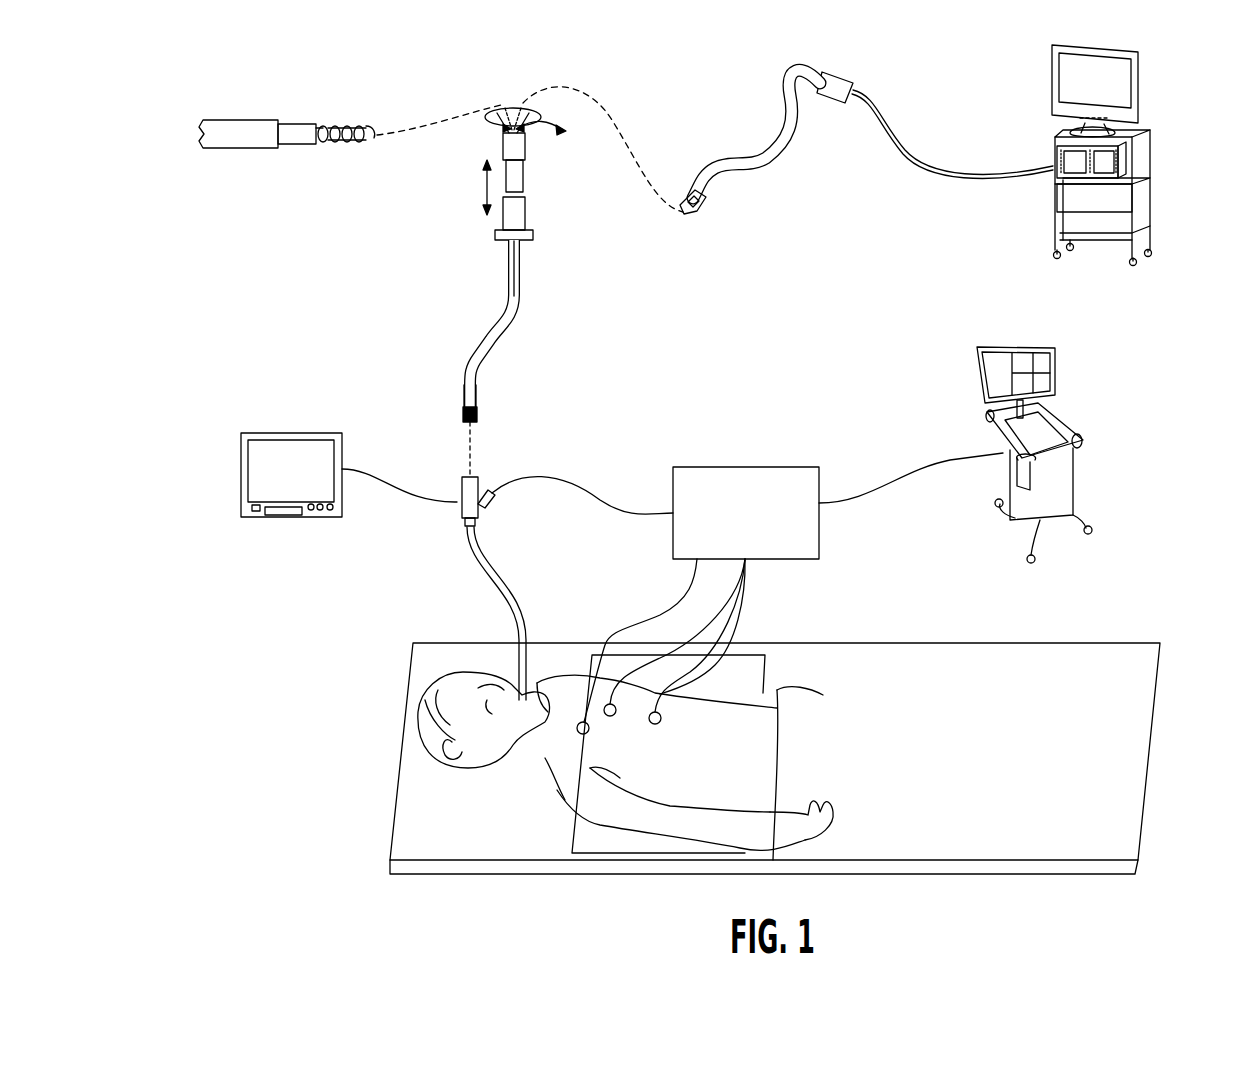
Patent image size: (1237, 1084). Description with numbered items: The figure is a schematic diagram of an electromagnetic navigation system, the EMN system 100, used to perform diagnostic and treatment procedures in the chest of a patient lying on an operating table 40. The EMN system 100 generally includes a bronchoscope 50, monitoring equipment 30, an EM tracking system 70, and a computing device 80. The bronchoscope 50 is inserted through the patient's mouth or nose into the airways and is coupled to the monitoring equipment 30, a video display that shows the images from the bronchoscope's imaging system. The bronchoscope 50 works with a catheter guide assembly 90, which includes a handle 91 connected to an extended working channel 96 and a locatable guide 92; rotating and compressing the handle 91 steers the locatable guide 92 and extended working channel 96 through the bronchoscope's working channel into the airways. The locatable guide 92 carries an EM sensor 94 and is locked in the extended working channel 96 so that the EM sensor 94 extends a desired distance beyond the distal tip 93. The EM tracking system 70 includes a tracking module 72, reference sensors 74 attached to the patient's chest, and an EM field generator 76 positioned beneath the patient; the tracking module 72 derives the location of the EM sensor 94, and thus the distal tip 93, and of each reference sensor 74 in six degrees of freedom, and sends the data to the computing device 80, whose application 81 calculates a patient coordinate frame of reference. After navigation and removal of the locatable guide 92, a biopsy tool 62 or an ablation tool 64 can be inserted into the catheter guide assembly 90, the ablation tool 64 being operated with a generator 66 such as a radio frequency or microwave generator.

The EMN system 100 is at (691, 116).
The biopsy tool 62 is at (298, 122).
The ablation tool 64 is at (773, 163).
The generator 66 is at (1127, 162).
The catheter guide assembly 90 is at (509, 292).
The handle 91 is at (546, 138).
The extended working channel 96 is at (520, 312).
The locatable guide 92 is at (477, 388).
The distal tip 93 is at (463, 413).
The EM sensor 94 is at (481, 407).
The monitoring equipment 30 is at (262, 517).
The bronchoscope 50 is at (480, 570).
The EM tracking system 70 is at (790, 579).
The tracking module 72 is at (760, 526).
The reference sensors 74 is at (612, 717).
The computing device 80 is at (1065, 452).
The application 81 is at (1055, 373).
The operating table 40 is at (403, 802).
The EM field generator 76 is at (587, 847).